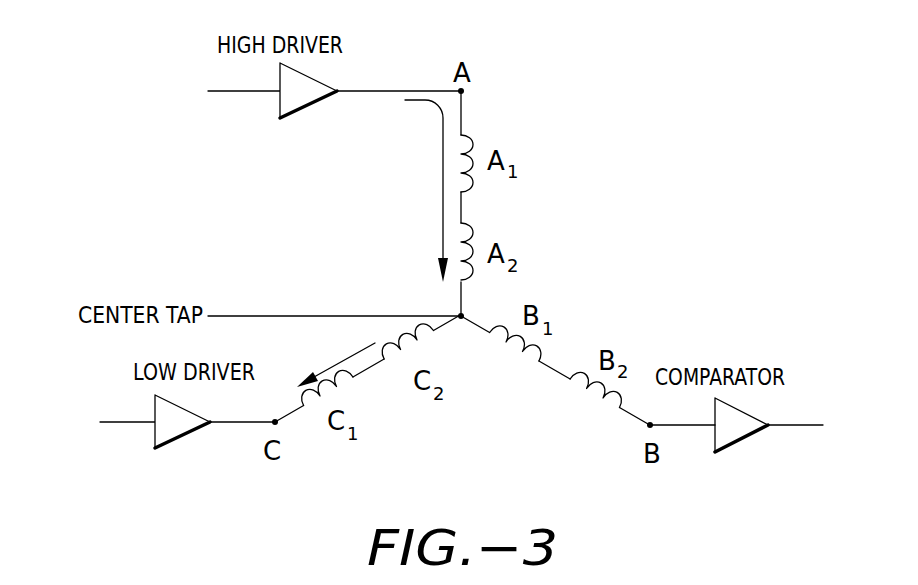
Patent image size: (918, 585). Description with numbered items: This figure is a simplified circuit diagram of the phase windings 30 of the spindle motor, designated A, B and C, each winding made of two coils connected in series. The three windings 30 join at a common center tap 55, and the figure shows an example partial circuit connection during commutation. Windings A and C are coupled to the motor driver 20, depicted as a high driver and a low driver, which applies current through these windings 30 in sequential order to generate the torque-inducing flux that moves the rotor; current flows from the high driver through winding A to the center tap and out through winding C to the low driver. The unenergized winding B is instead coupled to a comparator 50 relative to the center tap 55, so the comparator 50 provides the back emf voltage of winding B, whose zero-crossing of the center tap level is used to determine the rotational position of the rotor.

The motor driver 20 is at (313, 104).
The phase windings 30 is at (468, 135).
The comparator 50 is at (740, 445).
The center tap 55 is at (233, 315).